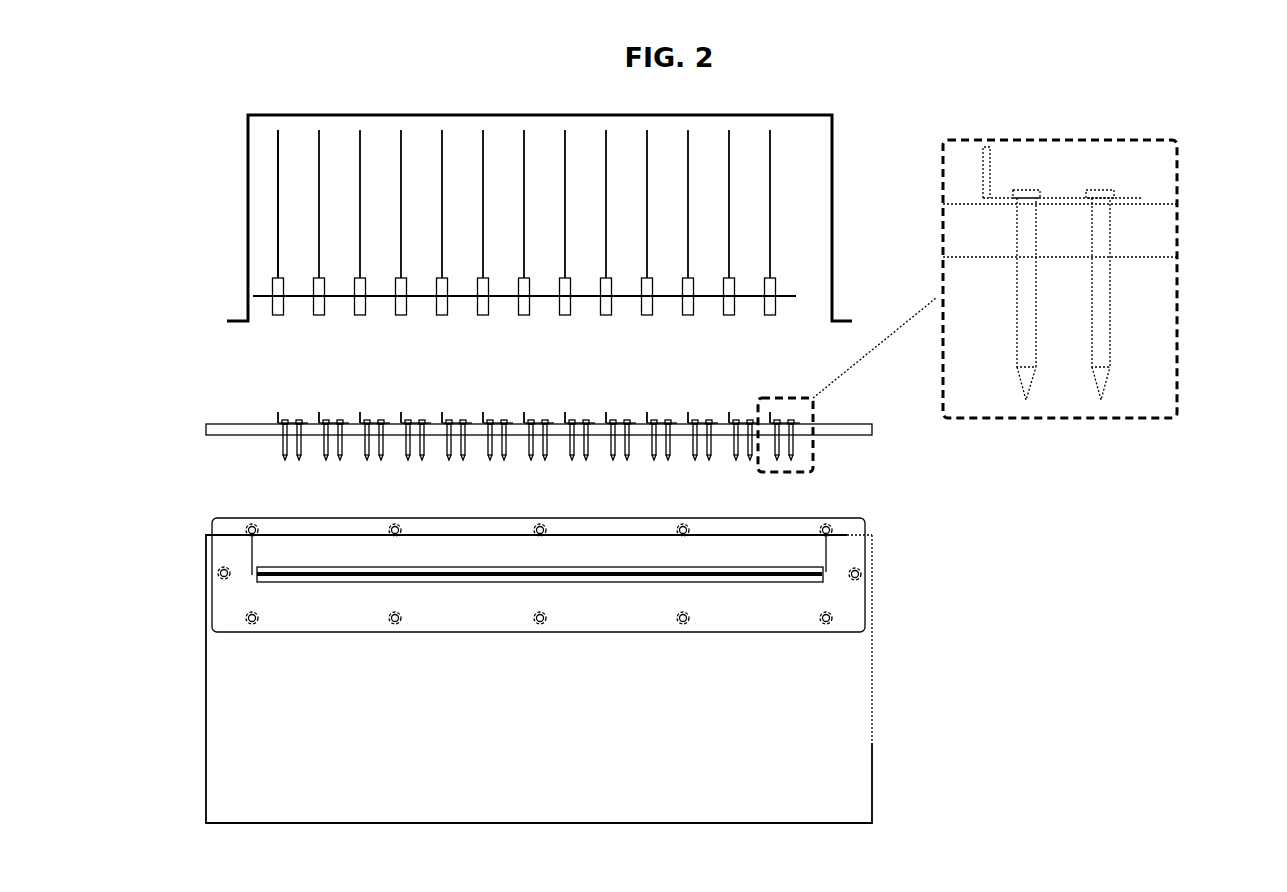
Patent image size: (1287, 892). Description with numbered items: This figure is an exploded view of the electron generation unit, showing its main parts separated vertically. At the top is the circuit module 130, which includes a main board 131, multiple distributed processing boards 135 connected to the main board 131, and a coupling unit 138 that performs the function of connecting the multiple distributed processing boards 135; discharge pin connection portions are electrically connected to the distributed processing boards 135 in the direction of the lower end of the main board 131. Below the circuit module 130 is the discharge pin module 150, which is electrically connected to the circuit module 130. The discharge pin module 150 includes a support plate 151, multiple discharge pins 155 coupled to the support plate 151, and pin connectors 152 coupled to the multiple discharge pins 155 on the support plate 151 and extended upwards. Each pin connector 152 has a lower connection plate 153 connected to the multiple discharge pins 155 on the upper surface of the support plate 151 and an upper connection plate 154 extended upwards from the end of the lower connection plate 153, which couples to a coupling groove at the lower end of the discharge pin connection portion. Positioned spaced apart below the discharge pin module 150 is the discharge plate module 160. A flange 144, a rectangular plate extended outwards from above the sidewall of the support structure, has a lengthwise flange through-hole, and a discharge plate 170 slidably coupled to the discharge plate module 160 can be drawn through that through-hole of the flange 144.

The circuit module 130 is at (262, 219).
The main board 131 is at (262, 300).
The distributed processing boards 135 is at (277, 289).
The coupling unit 138 is at (278, 152).
The flange 144 is at (862, 608).
The discharge pin module 150 is at (200, 428).
The support plate 151 is at (1160, 231).
The pin connectors 152 is at (1100, 137).
The lower connection plate 153 is at (1055, 193).
The upper connection plate 154 is at (990, 160).
The discharge pins 155 is at (1110, 320).
The discharge plate module 160 is at (828, 560).
The discharge plate 170 is at (257, 578).